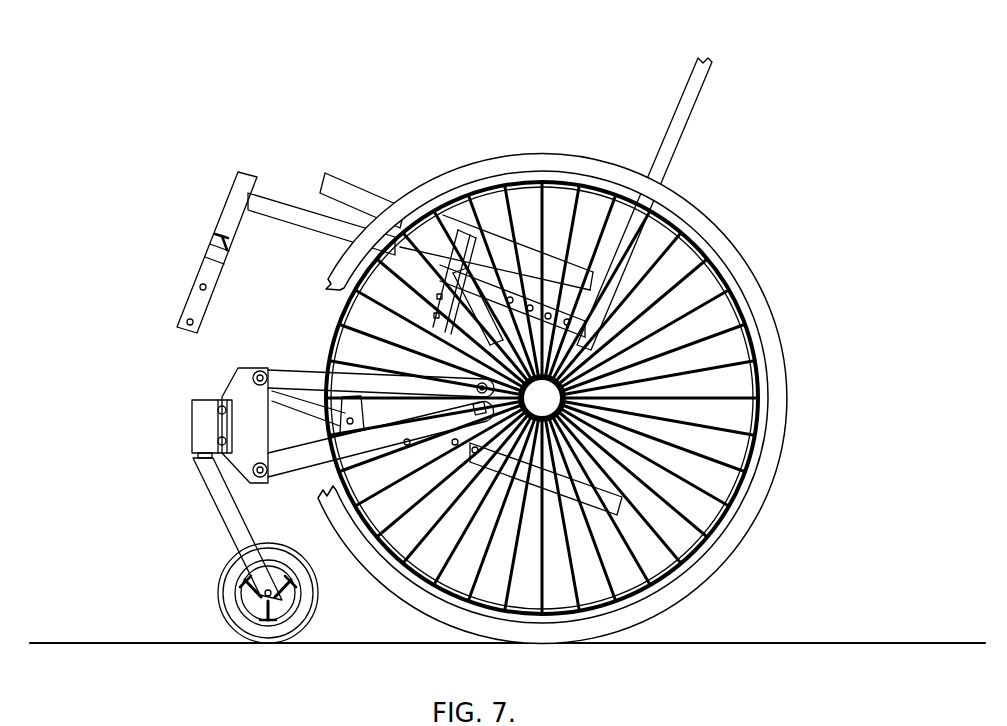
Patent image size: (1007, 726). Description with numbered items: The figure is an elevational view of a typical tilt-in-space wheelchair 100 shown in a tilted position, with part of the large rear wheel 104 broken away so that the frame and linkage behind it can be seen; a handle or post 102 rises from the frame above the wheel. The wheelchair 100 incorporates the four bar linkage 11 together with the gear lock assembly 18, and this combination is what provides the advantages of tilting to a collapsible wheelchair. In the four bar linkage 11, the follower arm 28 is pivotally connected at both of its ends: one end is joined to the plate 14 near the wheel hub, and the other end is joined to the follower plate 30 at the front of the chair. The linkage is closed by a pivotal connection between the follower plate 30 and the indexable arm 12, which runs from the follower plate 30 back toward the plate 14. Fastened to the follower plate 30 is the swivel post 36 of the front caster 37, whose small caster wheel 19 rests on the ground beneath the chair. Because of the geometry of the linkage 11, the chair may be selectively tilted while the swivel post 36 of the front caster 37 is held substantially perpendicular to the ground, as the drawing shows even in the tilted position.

The tilt-in-space wheelchair 100 is at (436, 104).
The backrest post / handle 102 is at (672, 126).
The rear wheel 104 is at (743, 275).
The four bar linkage 11 is at (160, 295).
The indexable arm 12 is at (328, 455).
The plate 14 is at (470, 376).
The gear lock assembly 18 is at (346, 368).
The caster wheel 19 is at (228, 592).
The follower arm 28 is at (305, 368).
The follower plate 30 is at (236, 370).
The swivel post 36 is at (200, 428).
The front caster 37 is at (223, 503).